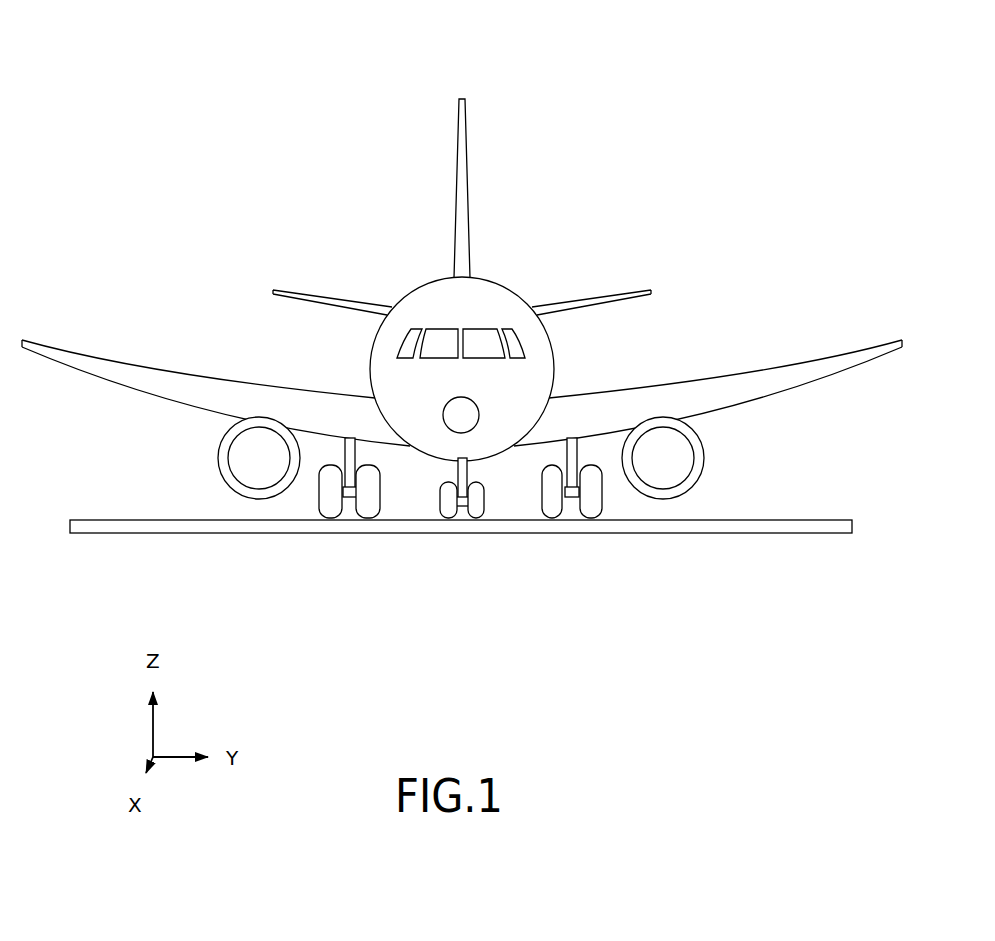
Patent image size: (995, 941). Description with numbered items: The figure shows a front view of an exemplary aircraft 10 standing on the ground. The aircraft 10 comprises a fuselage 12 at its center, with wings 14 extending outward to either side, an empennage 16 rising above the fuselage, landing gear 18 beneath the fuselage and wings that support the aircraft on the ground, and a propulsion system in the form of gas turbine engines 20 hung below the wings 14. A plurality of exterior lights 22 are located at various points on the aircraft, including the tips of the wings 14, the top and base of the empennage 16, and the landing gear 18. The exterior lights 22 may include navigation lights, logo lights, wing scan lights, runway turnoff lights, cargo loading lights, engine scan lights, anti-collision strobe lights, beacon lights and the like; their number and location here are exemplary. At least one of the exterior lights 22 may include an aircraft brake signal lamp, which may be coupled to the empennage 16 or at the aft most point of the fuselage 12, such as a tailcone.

The aircraft 10 is at (462, 312).
The fuselage 12 is at (326, 352).
The wings 14 is at (683, 388).
The empennage 16 is at (515, 201).
The landing gear 18 is at (612, 508).
The gas turbine engines 20 is at (704, 459).
The exterior lights 22 is at (463, 98).